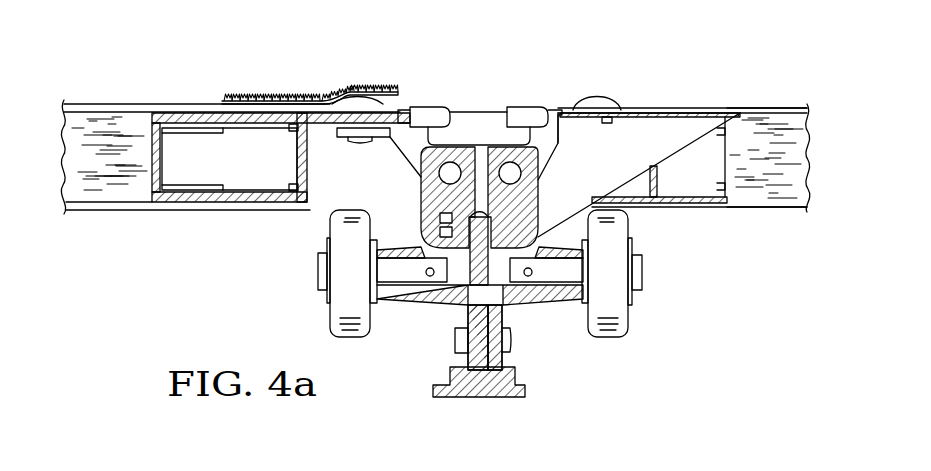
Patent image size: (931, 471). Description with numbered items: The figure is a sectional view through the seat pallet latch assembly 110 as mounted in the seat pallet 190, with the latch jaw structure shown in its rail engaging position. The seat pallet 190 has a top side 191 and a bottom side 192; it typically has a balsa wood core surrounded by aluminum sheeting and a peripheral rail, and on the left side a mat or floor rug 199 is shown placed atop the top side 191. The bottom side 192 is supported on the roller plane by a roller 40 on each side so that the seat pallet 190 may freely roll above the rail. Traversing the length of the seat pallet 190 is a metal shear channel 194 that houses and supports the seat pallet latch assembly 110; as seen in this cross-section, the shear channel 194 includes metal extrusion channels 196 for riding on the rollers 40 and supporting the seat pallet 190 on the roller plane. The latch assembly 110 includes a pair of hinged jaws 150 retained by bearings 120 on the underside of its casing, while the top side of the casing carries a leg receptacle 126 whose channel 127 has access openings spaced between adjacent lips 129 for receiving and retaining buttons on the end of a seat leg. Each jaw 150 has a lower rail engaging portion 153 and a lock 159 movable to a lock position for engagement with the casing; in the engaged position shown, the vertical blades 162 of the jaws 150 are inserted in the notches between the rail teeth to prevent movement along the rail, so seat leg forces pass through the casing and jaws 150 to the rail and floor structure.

The roller 40 is at (620, 321).
The seat pallet latch assembly 110 is at (549, 84).
The bearings 120 is at (418, 107).
The leg receptacle 126 is at (378, 72).
The channel 127 is at (468, 116).
The lips 129 is at (523, 107).
The jaw 150 is at (407, 181).
The lower and rail engaging portion 153 is at (710, 110).
The lock 159 is at (620, 108).
The vertical blades 162 is at (440, 207).
The seat pallet 190 is at (822, 97).
The top side 191 is at (775, 108).
The bottom side 192 is at (763, 210).
The shear channel 194 is at (212, 107).
The metal extrusion channels 196 is at (297, 208).
The mat or floor rug 199 is at (297, 93).